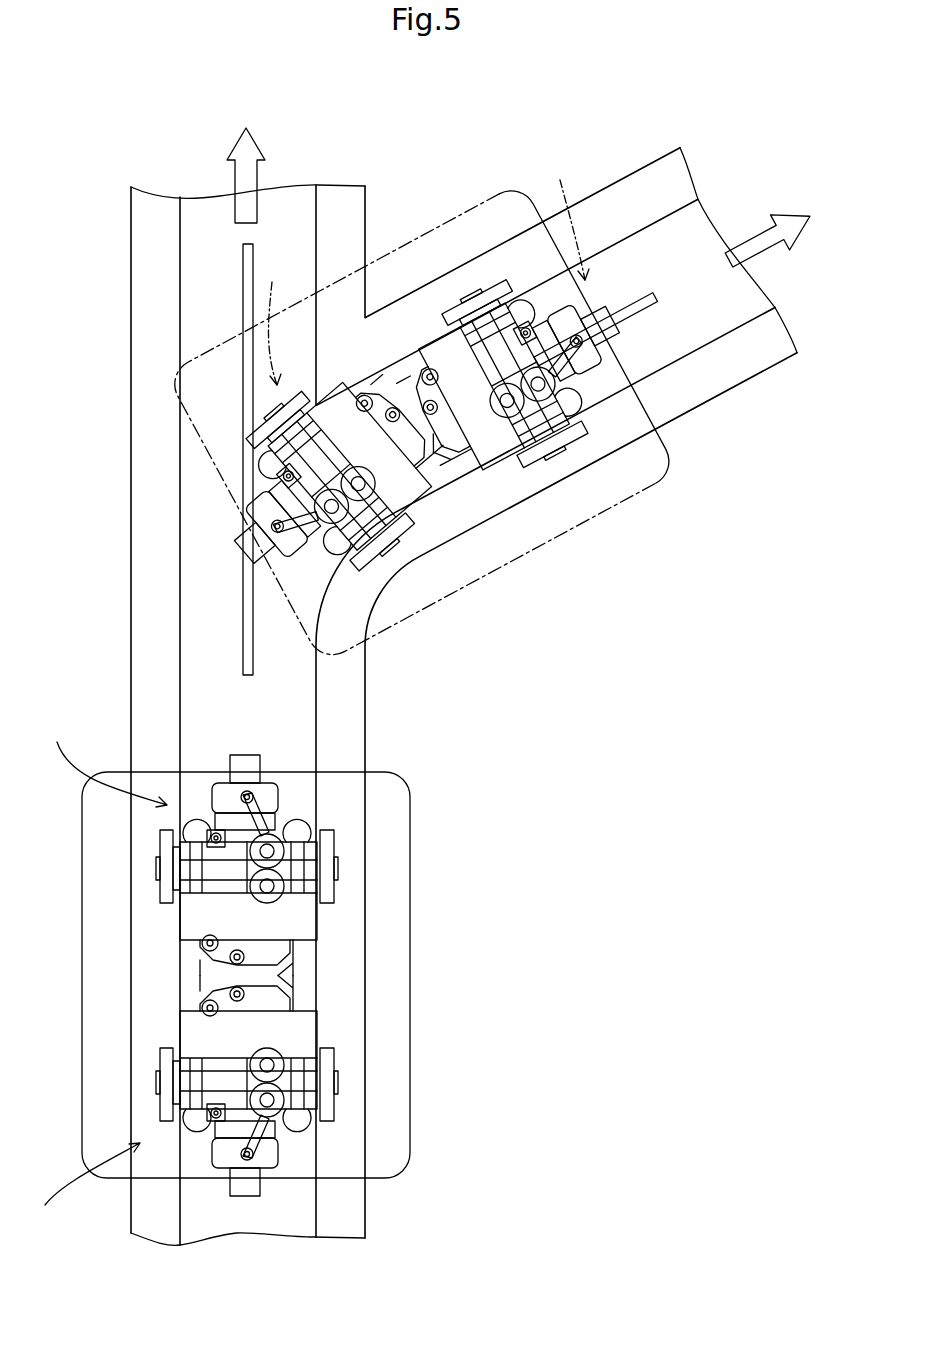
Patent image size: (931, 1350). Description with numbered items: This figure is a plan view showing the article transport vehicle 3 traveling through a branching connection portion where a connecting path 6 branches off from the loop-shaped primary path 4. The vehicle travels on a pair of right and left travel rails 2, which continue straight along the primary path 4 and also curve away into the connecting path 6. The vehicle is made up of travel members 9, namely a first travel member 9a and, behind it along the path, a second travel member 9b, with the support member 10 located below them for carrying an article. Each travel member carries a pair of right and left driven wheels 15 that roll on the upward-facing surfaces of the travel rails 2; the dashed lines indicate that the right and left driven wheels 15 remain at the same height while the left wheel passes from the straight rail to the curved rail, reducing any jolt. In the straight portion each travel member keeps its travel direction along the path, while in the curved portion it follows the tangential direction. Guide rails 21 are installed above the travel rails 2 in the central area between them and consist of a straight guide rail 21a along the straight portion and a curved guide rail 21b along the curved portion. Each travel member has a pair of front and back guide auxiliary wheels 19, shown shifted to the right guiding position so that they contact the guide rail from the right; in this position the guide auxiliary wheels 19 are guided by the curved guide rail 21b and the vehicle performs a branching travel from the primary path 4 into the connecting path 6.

The travel rail 2 is at (345, 212).
The article transport vehicle 3 is at (571, 578).
The primary path 4 is at (258, 185).
The connecting path 6 is at (765, 235).
The travel member 9 is at (300, 696).
The first travel member 9a is at (313, 482).
The second travel member 9b is at (154, 730).
The support member 10 is at (517, 560).
The driven wheel 15 is at (495, 287).
The guide auxiliary wheel 19 is at (512, 420).
The guide rail 21 is at (408, 459).
The straight guide rail 21a is at (243, 287).
The curved guide rail 21b is at (657, 312).